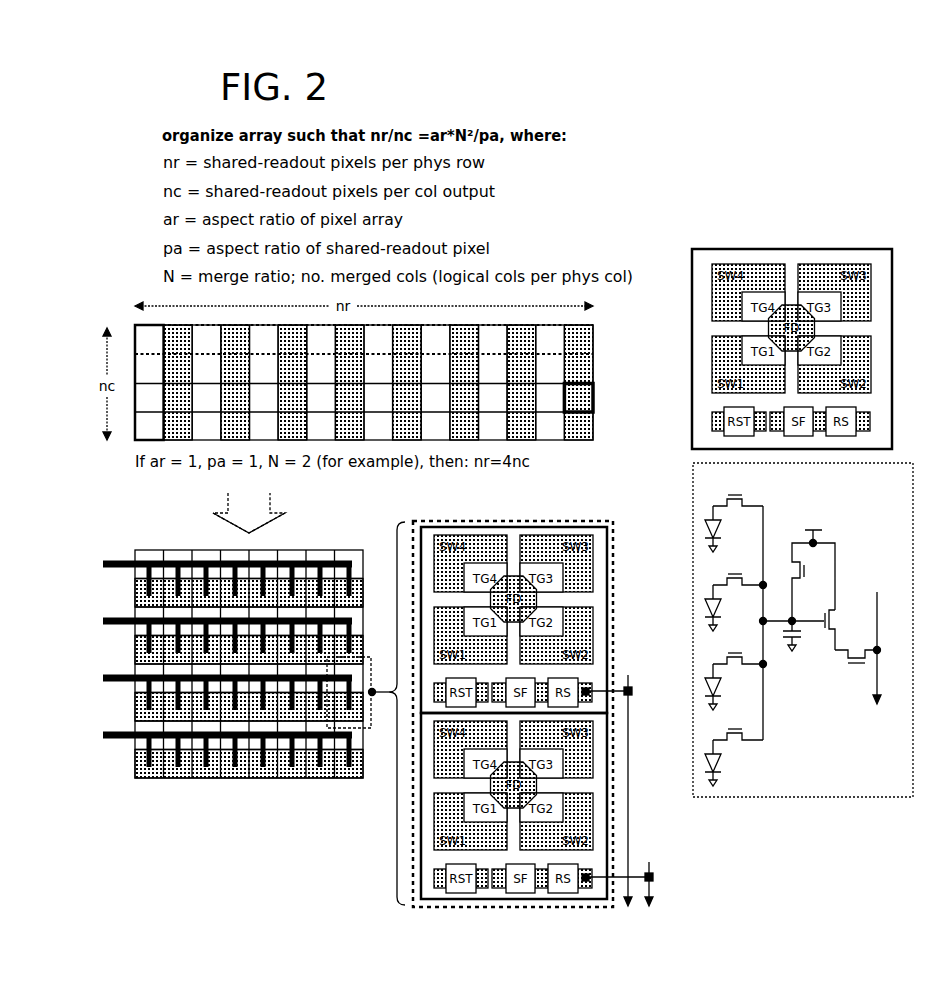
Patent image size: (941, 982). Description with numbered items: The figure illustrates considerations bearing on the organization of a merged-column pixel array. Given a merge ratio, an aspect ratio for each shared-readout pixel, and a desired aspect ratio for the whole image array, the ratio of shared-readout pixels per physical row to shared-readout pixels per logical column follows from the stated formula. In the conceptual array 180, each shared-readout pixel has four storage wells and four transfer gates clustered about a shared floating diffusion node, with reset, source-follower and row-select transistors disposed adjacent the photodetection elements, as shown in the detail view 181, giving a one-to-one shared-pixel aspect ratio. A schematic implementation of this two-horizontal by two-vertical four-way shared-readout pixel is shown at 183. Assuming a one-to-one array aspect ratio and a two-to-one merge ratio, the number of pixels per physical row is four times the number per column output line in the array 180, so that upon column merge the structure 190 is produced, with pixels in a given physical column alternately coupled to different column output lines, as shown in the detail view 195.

The array 180 is at (570, 454).
The detail view 181 is at (582, 400).
The schematic implementation of the shared-readout pixel 183 is at (700, 475).
The structure 190 is at (322, 528).
The detail view 195 is at (478, 521).